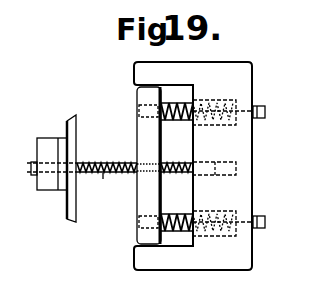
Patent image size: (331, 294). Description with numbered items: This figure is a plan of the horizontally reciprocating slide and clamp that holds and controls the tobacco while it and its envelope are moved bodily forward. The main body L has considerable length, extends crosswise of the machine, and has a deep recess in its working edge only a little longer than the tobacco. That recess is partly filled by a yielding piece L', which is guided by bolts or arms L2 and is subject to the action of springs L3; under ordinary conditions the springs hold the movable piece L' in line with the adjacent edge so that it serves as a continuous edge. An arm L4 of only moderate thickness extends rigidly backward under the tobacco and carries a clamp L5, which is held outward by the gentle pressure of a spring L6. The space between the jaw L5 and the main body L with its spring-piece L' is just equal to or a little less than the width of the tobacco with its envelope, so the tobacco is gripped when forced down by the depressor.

The main body L is at (193, 166).
The yielding piece L' is at (149, 165).
The bolts or arms L2 is at (265, 112).
The springs L3 is at (197, 160).
The arm L4 is at (100, 163).
The clamp L5 is at (52, 168).
The spring L6 is at (108, 184).